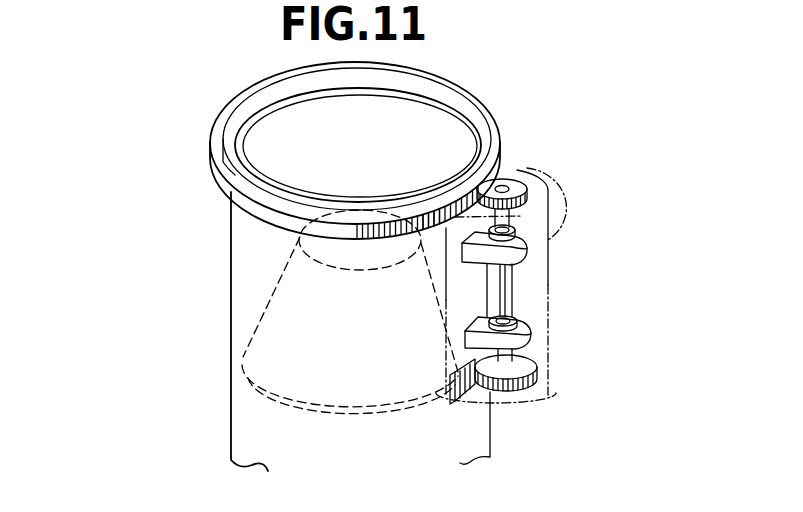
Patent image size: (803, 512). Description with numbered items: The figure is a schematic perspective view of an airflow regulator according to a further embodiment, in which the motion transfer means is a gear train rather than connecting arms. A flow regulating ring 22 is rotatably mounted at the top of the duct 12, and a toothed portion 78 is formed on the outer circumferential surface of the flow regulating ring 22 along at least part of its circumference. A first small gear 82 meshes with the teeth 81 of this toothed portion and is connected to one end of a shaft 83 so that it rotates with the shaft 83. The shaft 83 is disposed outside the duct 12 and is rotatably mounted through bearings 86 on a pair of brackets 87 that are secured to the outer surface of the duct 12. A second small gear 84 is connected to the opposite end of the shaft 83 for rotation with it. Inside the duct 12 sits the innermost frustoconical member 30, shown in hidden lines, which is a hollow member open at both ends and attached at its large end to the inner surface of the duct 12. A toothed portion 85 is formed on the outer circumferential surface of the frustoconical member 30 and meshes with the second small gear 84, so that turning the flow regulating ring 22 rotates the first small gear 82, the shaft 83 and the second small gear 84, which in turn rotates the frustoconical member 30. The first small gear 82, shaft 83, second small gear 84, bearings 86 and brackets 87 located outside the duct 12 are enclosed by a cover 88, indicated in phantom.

The flow regulating ring 22 is at (500, 153).
The ring gear teeth 78 is at (263, 215).
The gear teeth 81 is at (432, 235).
The duct 12 is at (232, 405).
The innermost frustoconical member 30 is at (263, 312).
The first small gear 82 is at (530, 187).
The bearings 86 is at (522, 216).
The brackets 87 is at (515, 247).
The shaft 83 is at (512, 278).
The second small gear 84 is at (538, 373).
The toothed portion 85 is at (467, 403).
The cover 88 is at (550, 289).